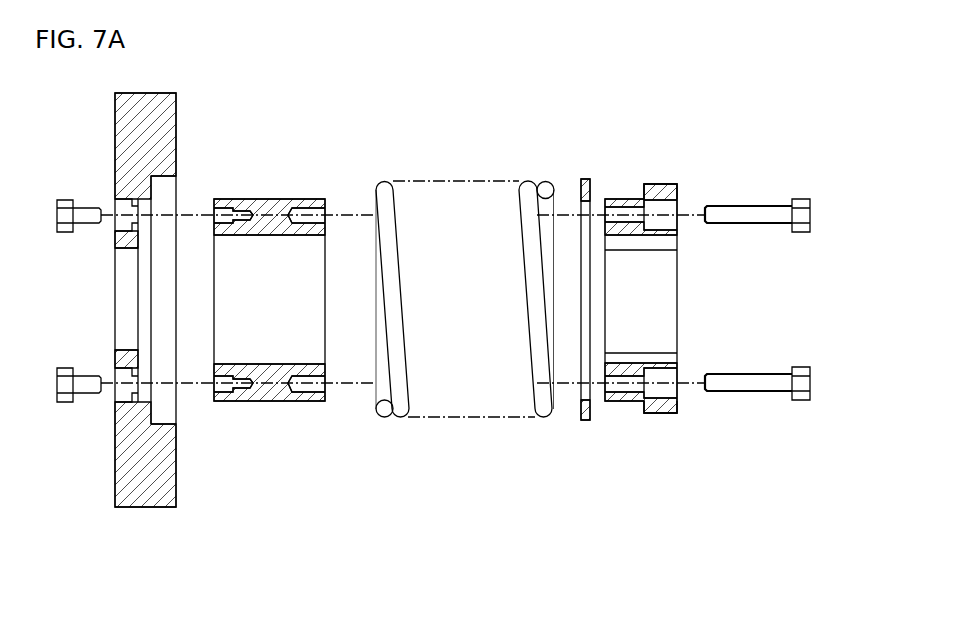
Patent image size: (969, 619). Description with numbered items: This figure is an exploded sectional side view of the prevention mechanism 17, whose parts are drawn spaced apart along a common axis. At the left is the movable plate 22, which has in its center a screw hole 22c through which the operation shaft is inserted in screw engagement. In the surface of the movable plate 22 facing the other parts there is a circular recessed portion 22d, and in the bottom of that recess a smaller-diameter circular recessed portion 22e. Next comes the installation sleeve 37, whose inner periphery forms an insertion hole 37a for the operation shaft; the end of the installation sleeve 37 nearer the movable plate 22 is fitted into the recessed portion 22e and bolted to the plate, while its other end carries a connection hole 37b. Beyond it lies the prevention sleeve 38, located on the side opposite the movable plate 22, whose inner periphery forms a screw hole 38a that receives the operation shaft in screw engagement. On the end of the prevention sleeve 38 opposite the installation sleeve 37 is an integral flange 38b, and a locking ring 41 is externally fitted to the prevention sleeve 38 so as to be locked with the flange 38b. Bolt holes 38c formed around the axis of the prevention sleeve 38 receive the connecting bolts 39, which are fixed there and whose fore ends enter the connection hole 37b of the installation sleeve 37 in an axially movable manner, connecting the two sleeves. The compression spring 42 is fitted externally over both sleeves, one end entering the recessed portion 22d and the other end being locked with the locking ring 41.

The prevention mechanism 17 is at (558, 148).
The movable plate 22 is at (139, 334).
The screw hole 22c is at (130, 248).
The recessed portion 22d is at (163, 175).
The recessed portion 22e is at (152, 394).
The installation sleeve 37 is at (303, 311).
The insertion hole 37a is at (281, 235).
The connection hole 37b is at (317, 398).
The prevention sleeve 38 is at (671, 325).
The screw hole 38a is at (646, 252).
The flange 38b is at (632, 411).
The bolt hole 38c is at (660, 212).
The connecting bolt 39 is at (752, 392).
The locking ring 41 is at (580, 419).
The compression spring 42 is at (400, 418).